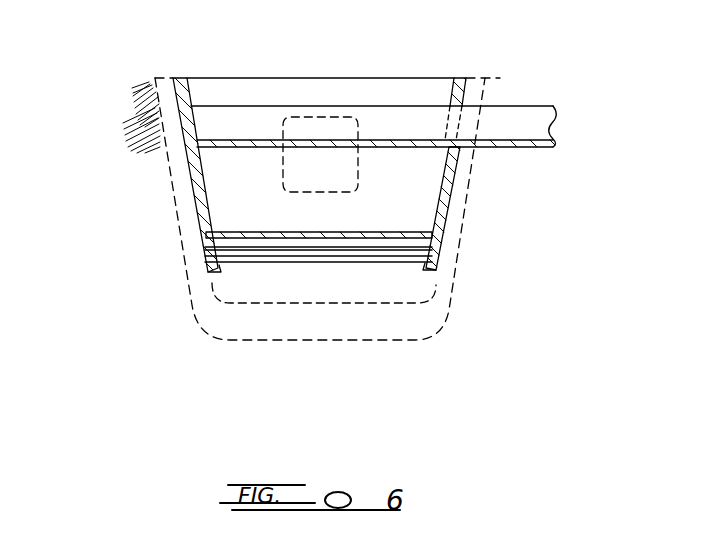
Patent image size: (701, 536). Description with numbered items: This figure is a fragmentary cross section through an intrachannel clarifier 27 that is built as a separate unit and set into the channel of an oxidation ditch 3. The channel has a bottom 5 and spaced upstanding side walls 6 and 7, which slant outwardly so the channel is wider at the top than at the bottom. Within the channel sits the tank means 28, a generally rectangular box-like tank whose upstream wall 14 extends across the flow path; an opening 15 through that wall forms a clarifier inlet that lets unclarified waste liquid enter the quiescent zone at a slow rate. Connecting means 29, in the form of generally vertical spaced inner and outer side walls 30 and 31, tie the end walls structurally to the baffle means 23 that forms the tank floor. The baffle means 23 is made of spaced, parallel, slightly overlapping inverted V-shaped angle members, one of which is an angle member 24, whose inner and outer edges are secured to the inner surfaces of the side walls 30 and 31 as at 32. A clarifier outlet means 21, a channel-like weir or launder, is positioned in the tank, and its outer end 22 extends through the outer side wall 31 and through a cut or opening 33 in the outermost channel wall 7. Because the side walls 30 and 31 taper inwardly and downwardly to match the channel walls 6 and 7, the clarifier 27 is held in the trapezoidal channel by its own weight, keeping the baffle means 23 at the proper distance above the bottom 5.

The oxidation ditch 3 is at (450, 238).
The bottom 5 is at (338, 335).
The side wall 6 is at (180, 212).
The side wall 7 is at (455, 195).
The upstream wall 14 is at (425, 81).
The opening 15 is at (358, 163).
The clarifier outlet means 21 is at (238, 110).
The outer end 22 is at (540, 122).
The baffle means 23 is at (358, 273).
The angle member 24 is at (258, 257).
The intrachannel clarifier 27 is at (186, 79).
The tank means 28 is at (466, 81).
The connecting means 29 is at (169, 68).
The inner side wall 30 is at (180, 94).
The outer side wall 31 is at (468, 82).
The securing location 32 is at (433, 232).
The opening 33 is at (483, 100).